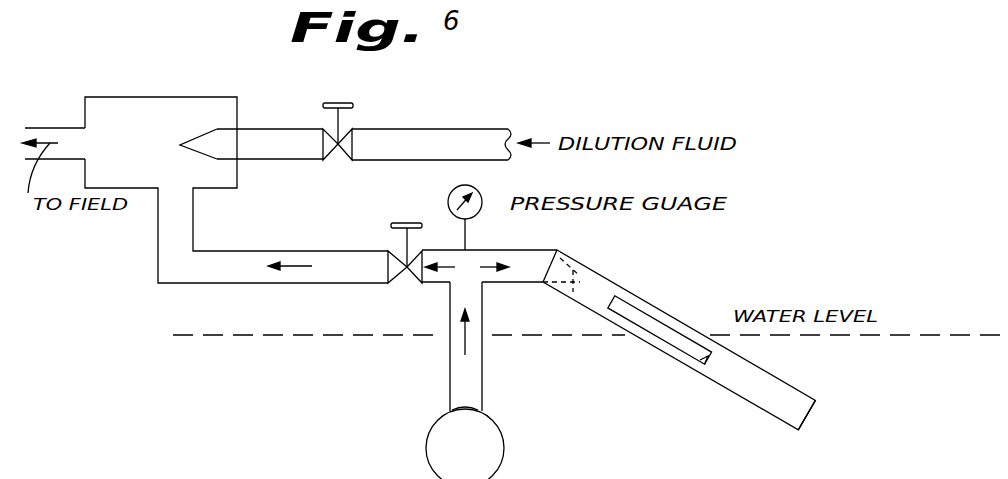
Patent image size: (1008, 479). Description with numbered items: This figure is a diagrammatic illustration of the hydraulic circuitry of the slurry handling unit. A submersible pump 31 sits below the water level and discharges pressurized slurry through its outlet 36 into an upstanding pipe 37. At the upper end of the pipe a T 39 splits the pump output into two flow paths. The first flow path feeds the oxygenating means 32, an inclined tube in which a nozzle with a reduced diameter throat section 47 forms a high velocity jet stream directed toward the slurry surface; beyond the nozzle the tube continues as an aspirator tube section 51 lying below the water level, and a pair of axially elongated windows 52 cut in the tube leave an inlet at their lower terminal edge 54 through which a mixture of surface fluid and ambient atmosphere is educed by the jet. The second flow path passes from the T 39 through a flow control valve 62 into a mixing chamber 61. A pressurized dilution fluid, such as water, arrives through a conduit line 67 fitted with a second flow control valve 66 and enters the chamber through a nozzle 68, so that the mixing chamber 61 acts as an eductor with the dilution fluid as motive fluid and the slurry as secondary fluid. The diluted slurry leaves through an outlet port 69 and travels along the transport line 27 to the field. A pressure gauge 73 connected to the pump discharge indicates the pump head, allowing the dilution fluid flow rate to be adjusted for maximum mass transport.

The transport line 27 is at (51, 125).
The submersible pump 31 is at (487, 457).
The oxygenating means 32 is at (713, 295).
The outlet 36 is at (458, 412).
The upstanding pipe 37 is at (470, 382).
The T 39 is at (437, 281).
The throat section 47 is at (587, 278).
The aspirator tube section 51 is at (763, 393).
The windows 52 is at (653, 328).
The lower terminal edge 54 is at (702, 357).
The mixing chamber 61 is at (152, 112).
The flow control valve 62 is at (398, 277).
The second flow control valve 66 is at (347, 103).
The conduit line 67 is at (277, 150).
The nozzle 68 is at (200, 138).
The outlet port 69 is at (83, 143).
The pressure gauge 73 is at (448, 202).